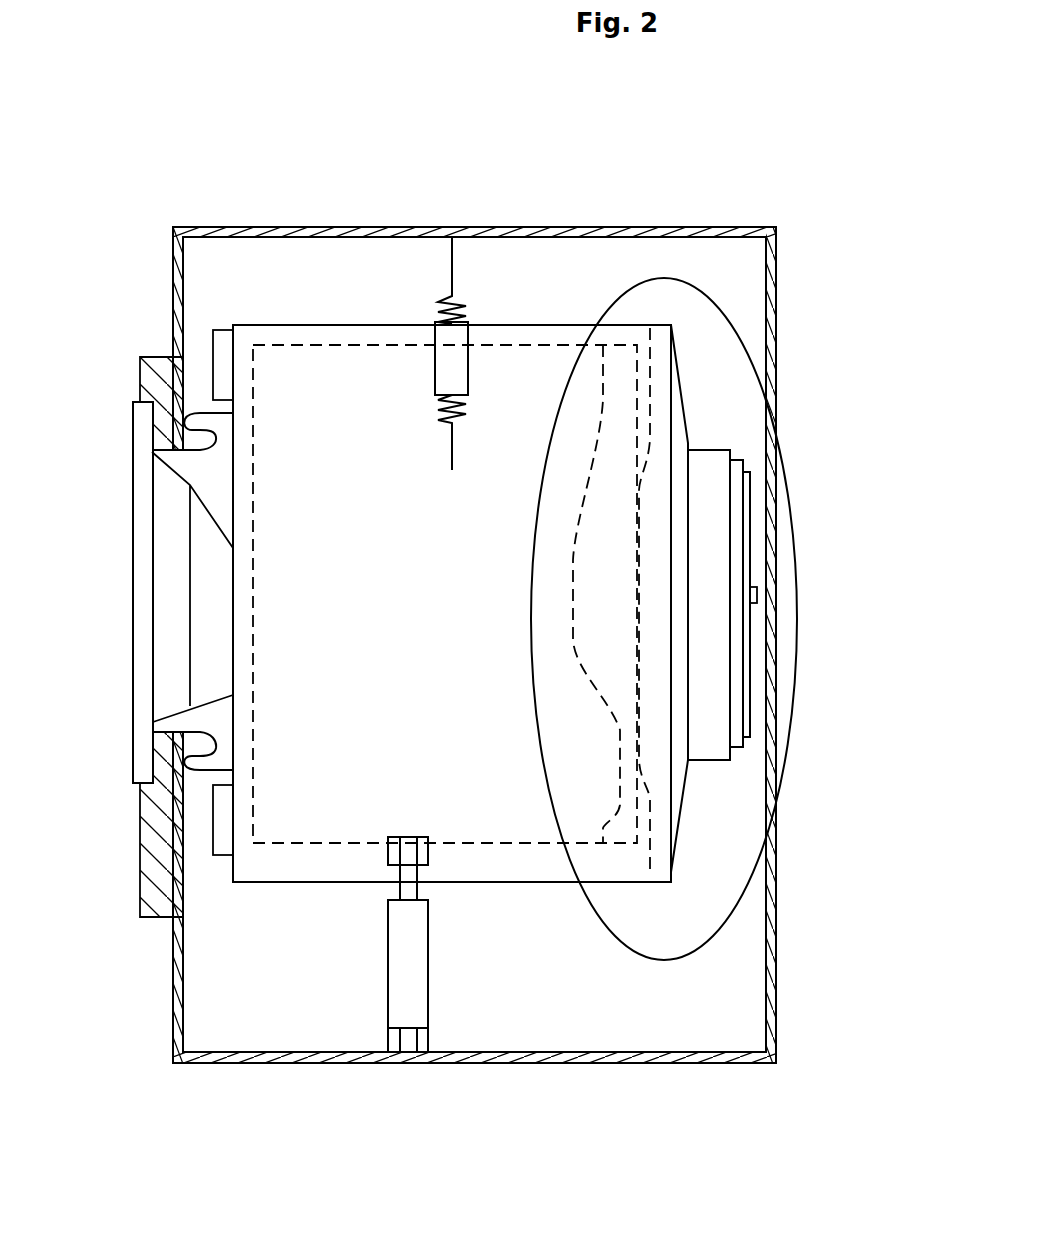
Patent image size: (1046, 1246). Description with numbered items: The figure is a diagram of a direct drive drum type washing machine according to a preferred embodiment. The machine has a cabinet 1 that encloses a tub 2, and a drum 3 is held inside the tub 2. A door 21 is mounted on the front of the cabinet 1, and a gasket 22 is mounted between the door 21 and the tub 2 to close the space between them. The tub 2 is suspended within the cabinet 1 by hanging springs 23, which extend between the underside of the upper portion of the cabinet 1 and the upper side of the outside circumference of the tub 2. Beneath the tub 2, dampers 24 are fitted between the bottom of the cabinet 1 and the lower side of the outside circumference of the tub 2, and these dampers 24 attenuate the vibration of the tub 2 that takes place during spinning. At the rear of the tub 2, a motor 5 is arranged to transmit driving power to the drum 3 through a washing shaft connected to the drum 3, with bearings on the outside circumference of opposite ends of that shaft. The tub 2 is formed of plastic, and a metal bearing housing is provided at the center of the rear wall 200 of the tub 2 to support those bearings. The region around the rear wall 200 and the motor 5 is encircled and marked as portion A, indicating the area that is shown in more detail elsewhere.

The cabinet 1 is at (258, 227).
The tub 2 is at (544, 325).
The drum 3 is at (352, 345).
The motor 5 is at (733, 670).
The door 21 is at (143, 589).
The gasket 22 is at (183, 790).
The hanging springs 23 is at (463, 305).
The dampers 24 is at (398, 983).
The rear wall 200 is at (688, 393).
The portion A is at (712, 297).